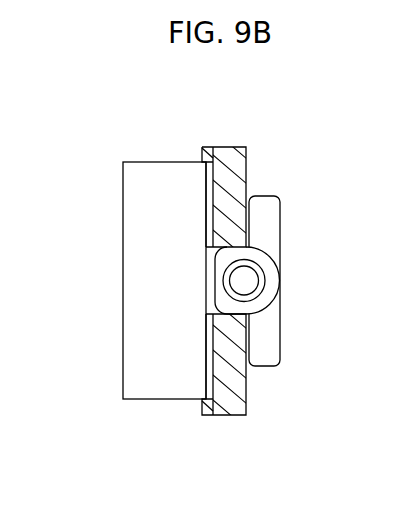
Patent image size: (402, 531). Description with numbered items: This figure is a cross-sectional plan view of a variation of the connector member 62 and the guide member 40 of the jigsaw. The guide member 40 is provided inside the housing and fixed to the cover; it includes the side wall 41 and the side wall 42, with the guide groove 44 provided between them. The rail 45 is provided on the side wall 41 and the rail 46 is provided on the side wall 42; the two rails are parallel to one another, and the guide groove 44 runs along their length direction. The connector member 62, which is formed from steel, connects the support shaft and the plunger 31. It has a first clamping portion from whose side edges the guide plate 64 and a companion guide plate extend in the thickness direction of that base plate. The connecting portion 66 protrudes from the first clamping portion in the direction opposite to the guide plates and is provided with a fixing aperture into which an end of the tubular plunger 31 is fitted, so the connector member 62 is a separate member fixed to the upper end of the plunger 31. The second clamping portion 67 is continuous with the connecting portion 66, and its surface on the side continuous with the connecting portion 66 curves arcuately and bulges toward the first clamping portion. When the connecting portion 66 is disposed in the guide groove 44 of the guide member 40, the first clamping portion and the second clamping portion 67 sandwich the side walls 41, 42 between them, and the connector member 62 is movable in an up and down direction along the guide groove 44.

The plunger 31 is at (264, 281).
The guide member 40 is at (198, 304).
The side wall 41 is at (238, 167).
The side wall 42 is at (237, 378).
The guide groove 44 is at (214, 311).
The rail 45 is at (202, 148).
The rail 46 is at (205, 417).
The connector member 62 is at (117, 284).
The guide plate 64 is at (143, 312).
The connecting portion 66 is at (215, 254).
The second clamping portion 67 is at (268, 215).